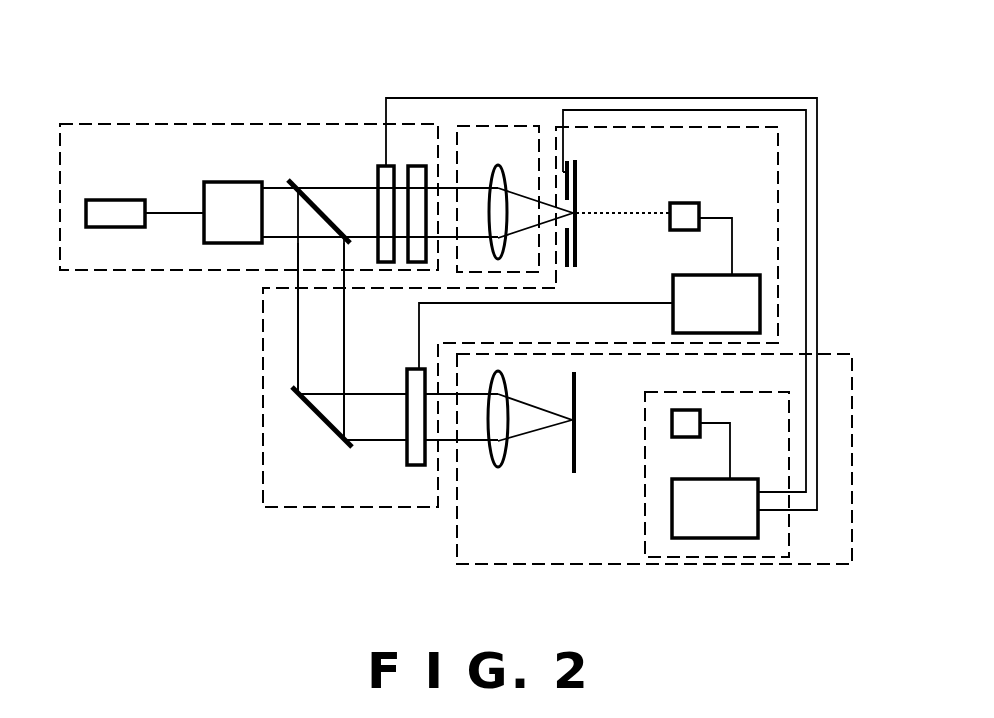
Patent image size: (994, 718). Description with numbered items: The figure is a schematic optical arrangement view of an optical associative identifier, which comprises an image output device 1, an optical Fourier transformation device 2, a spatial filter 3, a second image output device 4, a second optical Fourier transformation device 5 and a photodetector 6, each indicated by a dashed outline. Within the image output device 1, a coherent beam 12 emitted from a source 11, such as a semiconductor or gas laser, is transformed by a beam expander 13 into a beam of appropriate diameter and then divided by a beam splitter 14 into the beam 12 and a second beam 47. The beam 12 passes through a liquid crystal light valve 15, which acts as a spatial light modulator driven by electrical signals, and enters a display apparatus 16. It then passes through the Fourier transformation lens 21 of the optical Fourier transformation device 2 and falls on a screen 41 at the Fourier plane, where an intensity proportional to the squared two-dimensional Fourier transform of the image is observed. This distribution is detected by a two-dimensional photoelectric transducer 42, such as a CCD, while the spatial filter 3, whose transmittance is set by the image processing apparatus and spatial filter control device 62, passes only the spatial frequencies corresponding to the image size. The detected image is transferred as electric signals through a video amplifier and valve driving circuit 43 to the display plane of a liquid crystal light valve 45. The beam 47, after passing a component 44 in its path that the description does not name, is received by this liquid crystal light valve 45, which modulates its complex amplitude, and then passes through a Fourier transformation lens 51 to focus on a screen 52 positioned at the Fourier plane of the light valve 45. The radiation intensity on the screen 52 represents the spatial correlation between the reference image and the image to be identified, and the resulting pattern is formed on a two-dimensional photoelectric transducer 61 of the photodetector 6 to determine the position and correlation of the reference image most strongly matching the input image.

The image output device 1 is at (93, 124).
The source 11 is at (88, 200).
The coherent beam 12 is at (172, 213).
The beam expander 13 is at (233, 212).
The beam splitter 14 is at (298, 178).
The liquid crystal light valve 15 is at (377, 166).
The display apparatus 16 is at (418, 166).
The optical Fourier transformation device 2 is at (462, 126).
The Fourier transformation lens 21 is at (500, 165).
The spatial filter 3 is at (567, 160).
The screen 41 is at (577, 182).
The two-dimensional photoelectric transducer 42 is at (685, 203).
The video amplifier and valve driving circuit 43 is at (716, 304).
The second image output device 4 is at (690, 127).
The beam 47 is at (315, 335).
The reflecting mirror 44 is at (313, 412).
The liquid crystal light valve 45 is at (407, 465).
The second optical Fourier transformation device 5 is at (457, 535).
The Fourier transformation lens 51 is at (498, 467).
The screen 52 is at (577, 455).
The photodetector 6 is at (789, 527).
The two-dimensional photoelectric transducer 61 is at (672, 420).
The image processing apparatus and spatial filter control device 62 is at (715, 508).